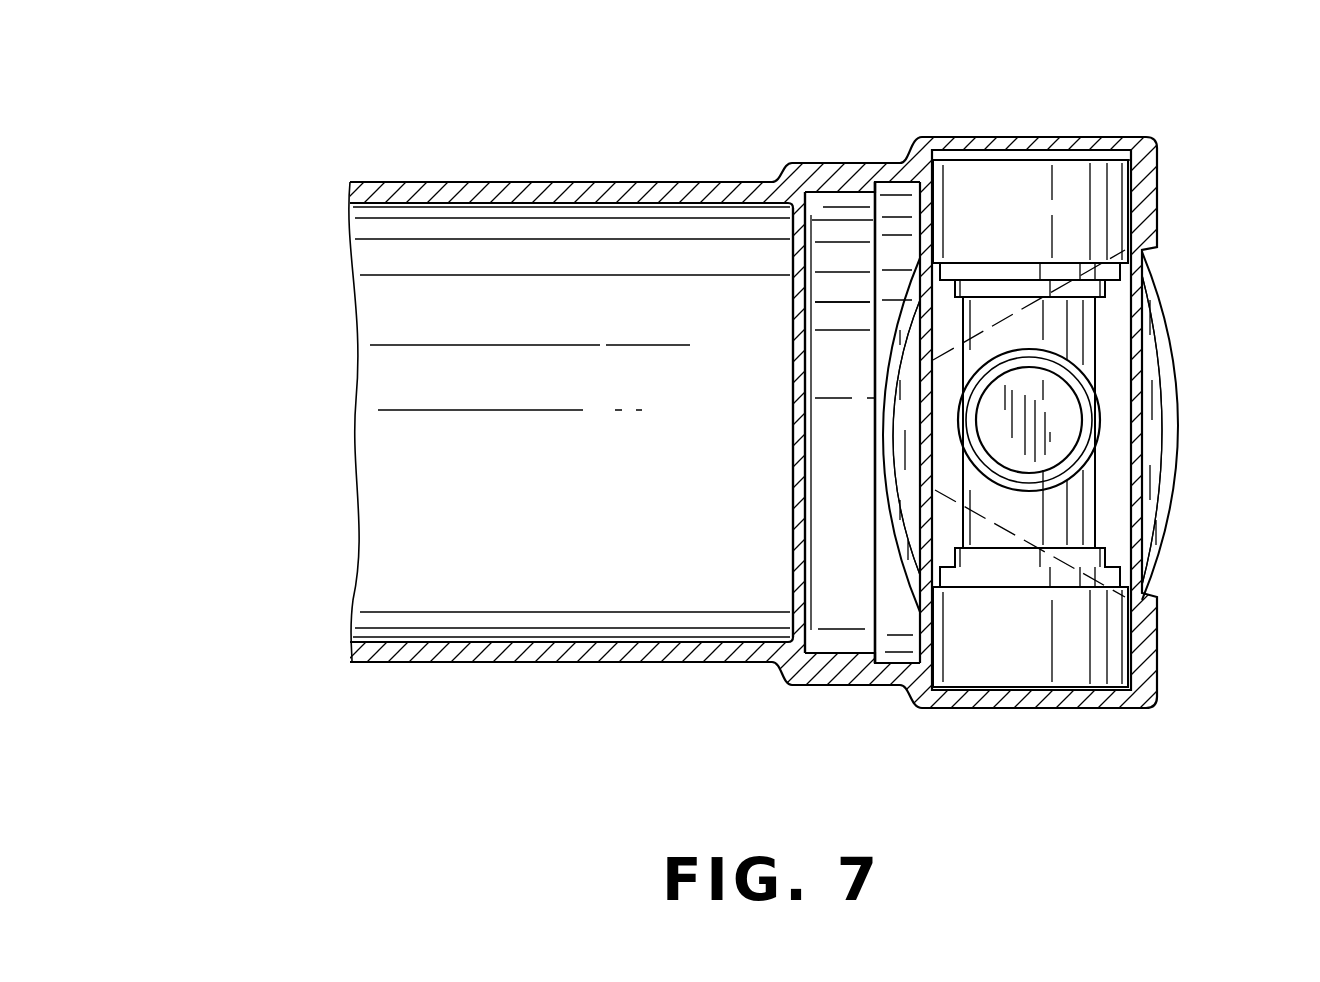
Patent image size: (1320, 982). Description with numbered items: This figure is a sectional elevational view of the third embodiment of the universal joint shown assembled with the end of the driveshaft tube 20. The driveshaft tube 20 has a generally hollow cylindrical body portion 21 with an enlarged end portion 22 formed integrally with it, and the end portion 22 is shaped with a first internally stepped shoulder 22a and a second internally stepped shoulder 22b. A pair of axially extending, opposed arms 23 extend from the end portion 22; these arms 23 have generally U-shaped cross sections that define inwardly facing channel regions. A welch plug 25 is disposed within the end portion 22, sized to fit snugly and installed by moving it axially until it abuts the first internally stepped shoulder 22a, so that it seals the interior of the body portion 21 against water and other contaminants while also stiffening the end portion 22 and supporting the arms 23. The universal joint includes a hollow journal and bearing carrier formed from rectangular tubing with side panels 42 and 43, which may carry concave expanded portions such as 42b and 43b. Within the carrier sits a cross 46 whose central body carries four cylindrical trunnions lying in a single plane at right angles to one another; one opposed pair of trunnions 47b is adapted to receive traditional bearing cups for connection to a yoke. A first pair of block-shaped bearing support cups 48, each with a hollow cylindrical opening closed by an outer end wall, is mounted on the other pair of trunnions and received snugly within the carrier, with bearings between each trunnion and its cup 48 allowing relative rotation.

The driveshaft tube 20 is at (412, 716).
The body portion 21 is at (487, 187).
The end portion 22 is at (920, 140).
The first internally stepped shoulder 22a is at (820, 203).
The second internally stepped shoulder 22b is at (948, 150).
The arm 23 is at (1067, 140).
The welch plug 25 is at (828, 418).
The side panel 42 is at (1137, 310).
The concave expanded portion 42b is at (1162, 467).
The side panel 43 is at (925, 298).
The concave expanded portion 43b is at (903, 495).
The cross 46 is at (1083, 330).
The trunnion 47b is at (1068, 430).
The bearing support cup 48 is at (1035, 244).